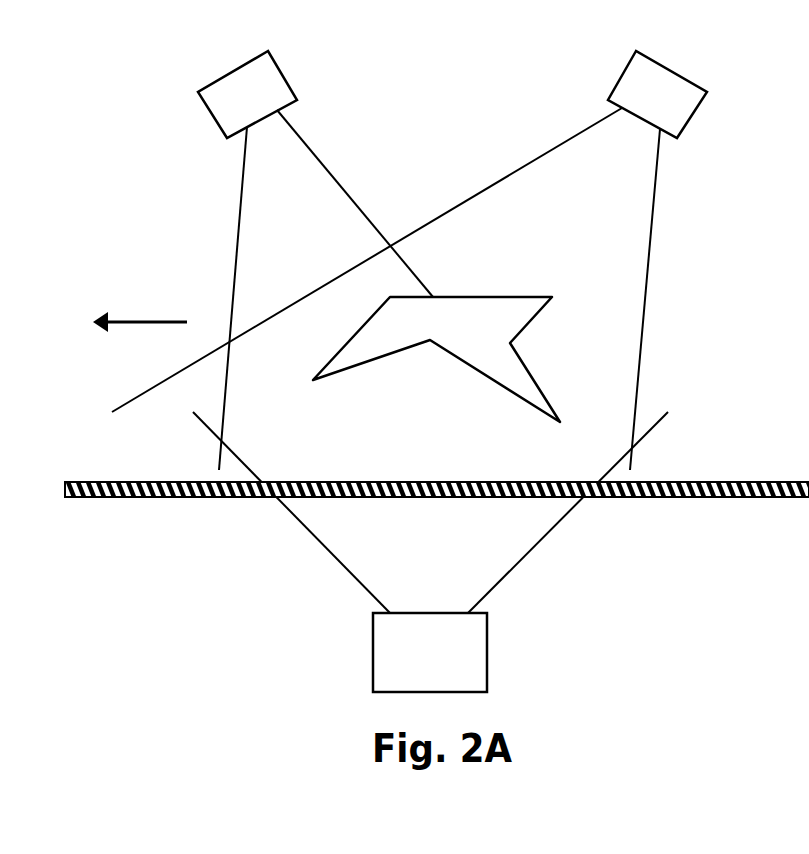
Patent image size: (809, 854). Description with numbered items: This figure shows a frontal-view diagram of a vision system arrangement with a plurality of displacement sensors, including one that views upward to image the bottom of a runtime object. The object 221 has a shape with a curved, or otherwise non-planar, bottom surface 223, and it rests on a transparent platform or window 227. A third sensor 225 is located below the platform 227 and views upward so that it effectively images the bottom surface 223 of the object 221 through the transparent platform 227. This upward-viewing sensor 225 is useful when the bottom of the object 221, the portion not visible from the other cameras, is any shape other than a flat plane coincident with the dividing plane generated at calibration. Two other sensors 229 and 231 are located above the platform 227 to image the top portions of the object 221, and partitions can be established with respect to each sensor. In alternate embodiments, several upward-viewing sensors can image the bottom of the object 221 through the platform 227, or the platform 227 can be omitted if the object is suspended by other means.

The object 221 is at (436, 359).
The bottom surface 223 is at (427, 349).
The third sensor 225 is at (430, 552).
The transparent platform or window 227 is at (722, 497).
The sensor 229 is at (315, 260).
The sensor 231 is at (409, 260).